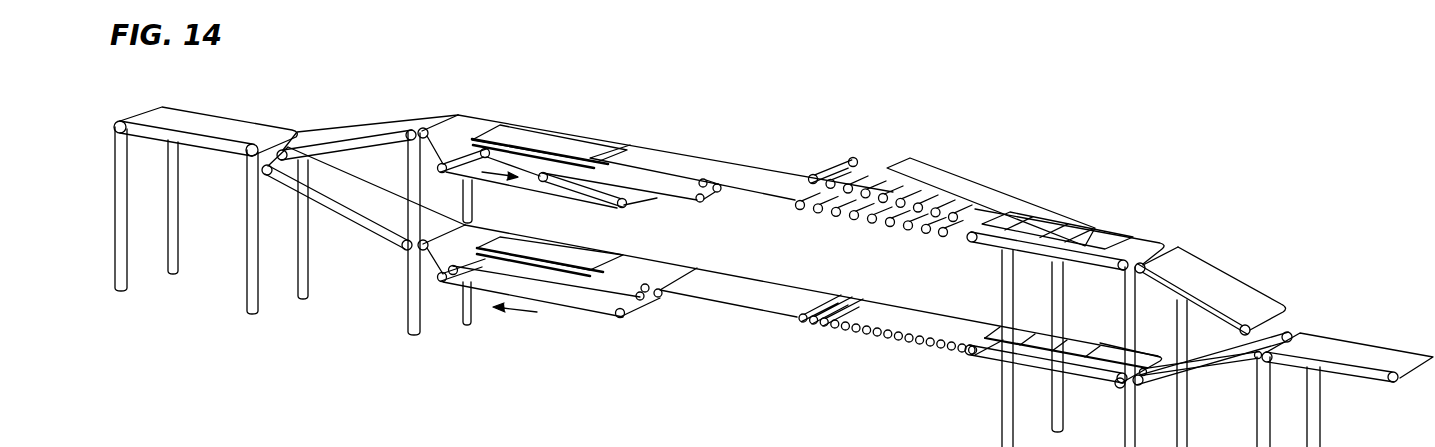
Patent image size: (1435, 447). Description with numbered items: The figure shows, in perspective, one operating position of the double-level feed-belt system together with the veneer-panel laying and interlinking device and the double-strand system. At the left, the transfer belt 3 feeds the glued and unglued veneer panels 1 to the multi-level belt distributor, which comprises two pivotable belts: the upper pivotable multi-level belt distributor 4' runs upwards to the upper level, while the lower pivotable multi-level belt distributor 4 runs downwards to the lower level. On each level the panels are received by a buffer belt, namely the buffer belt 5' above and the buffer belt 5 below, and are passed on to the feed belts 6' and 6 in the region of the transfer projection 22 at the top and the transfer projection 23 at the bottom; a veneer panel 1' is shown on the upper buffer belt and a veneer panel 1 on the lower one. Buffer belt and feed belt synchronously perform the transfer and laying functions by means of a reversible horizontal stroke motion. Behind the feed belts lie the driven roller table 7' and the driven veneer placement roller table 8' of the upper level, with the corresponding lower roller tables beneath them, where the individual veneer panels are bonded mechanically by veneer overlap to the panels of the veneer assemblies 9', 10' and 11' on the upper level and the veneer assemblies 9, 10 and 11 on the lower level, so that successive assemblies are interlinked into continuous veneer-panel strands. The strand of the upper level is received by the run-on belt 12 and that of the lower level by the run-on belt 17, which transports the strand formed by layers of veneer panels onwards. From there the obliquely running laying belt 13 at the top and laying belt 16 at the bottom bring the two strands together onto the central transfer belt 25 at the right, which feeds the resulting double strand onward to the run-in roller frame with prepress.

The transfer belt 3 is at (245, 125).
The upper pivotable multi-level belt distributor 4' is at (367, 108).
The lower pivotable multi-level belt distributor 4 is at (363, 228).
The buffer belt 5' is at (517, 139).
The buffer belt 5 is at (529, 310).
The veneer panel 1' is at (584, 132).
The veneer panel 1 is at (551, 316).
The transfer projection 22 is at (698, 182).
The transfer projection 23 is at (630, 308).
The feed belt 6' is at (692, 150).
The feed belt 6 is at (728, 331).
The driven roller table 7' is at (880, 166).
The driven veneer placement roller table 8' is at (891, 161).
The veneer assembly 11' is at (991, 177).
The veneer assembly 11 is at (966, 362).
The veneer assembly 10' is at (1057, 191).
The veneer assembly 10 is at (1066, 376).
The veneer assembly 9' is at (1057, 196).
The veneer assembly 9 is at (1046, 387).
The run-on belt 12 is at (1137, 233).
The laying belt 13 is at (1208, 283).
The laying belt 16 is at (1213, 360).
The run-on belt 17 is at (1150, 360).
The central transfer belt 25 is at (1345, 352).